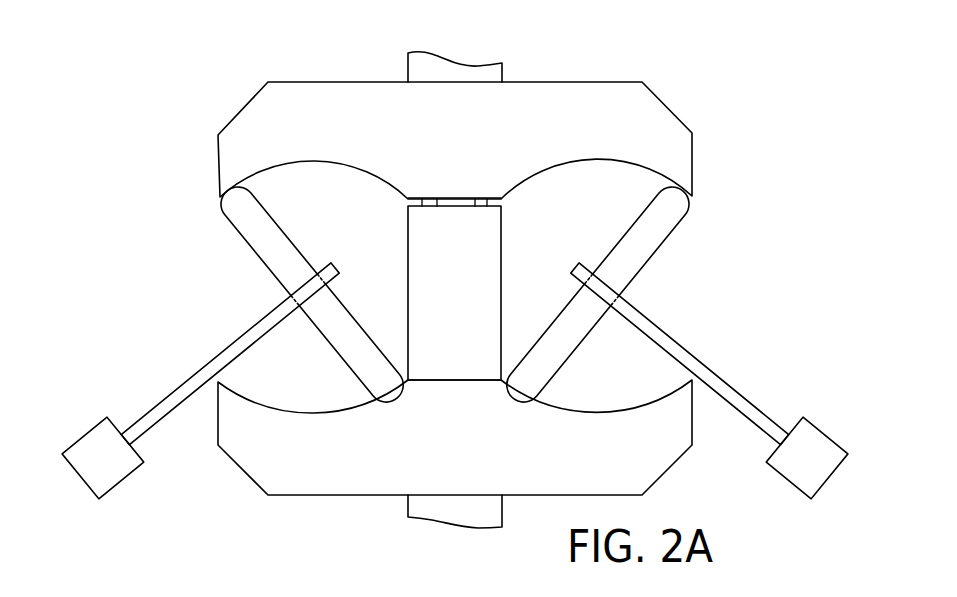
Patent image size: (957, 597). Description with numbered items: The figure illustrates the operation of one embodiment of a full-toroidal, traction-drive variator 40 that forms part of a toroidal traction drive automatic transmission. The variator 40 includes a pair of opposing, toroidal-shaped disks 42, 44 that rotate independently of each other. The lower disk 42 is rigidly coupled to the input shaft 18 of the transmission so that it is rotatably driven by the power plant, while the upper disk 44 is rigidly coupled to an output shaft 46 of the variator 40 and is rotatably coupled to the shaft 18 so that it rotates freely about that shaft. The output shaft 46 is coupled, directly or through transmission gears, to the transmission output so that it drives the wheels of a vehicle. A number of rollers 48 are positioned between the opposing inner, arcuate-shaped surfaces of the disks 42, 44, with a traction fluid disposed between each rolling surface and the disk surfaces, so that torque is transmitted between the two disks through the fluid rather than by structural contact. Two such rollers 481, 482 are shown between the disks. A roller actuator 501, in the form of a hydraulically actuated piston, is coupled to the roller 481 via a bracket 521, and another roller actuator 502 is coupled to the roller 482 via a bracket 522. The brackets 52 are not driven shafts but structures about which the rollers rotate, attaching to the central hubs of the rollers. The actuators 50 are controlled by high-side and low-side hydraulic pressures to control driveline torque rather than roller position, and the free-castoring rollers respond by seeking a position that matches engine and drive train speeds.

The variator 40 is at (748, 119).
The disk 44 is at (587, 82).
The disk 42 is at (297, 496).
The output shaft 46 is at (440, 53).
The input shaft 18 is at (467, 528).
The rollers 48 is at (463, 294).
The roller 481 is at (682, 219).
The roller 482 is at (243, 237).
The brackets 52 is at (454, 354).
The bracket 521 is at (688, 345).
The bracket 522 is at (160, 398).
The roller actuators 50 is at (461, 464).
The roller actuator 501 is at (830, 430).
The roller actuator 502 is at (121, 483).